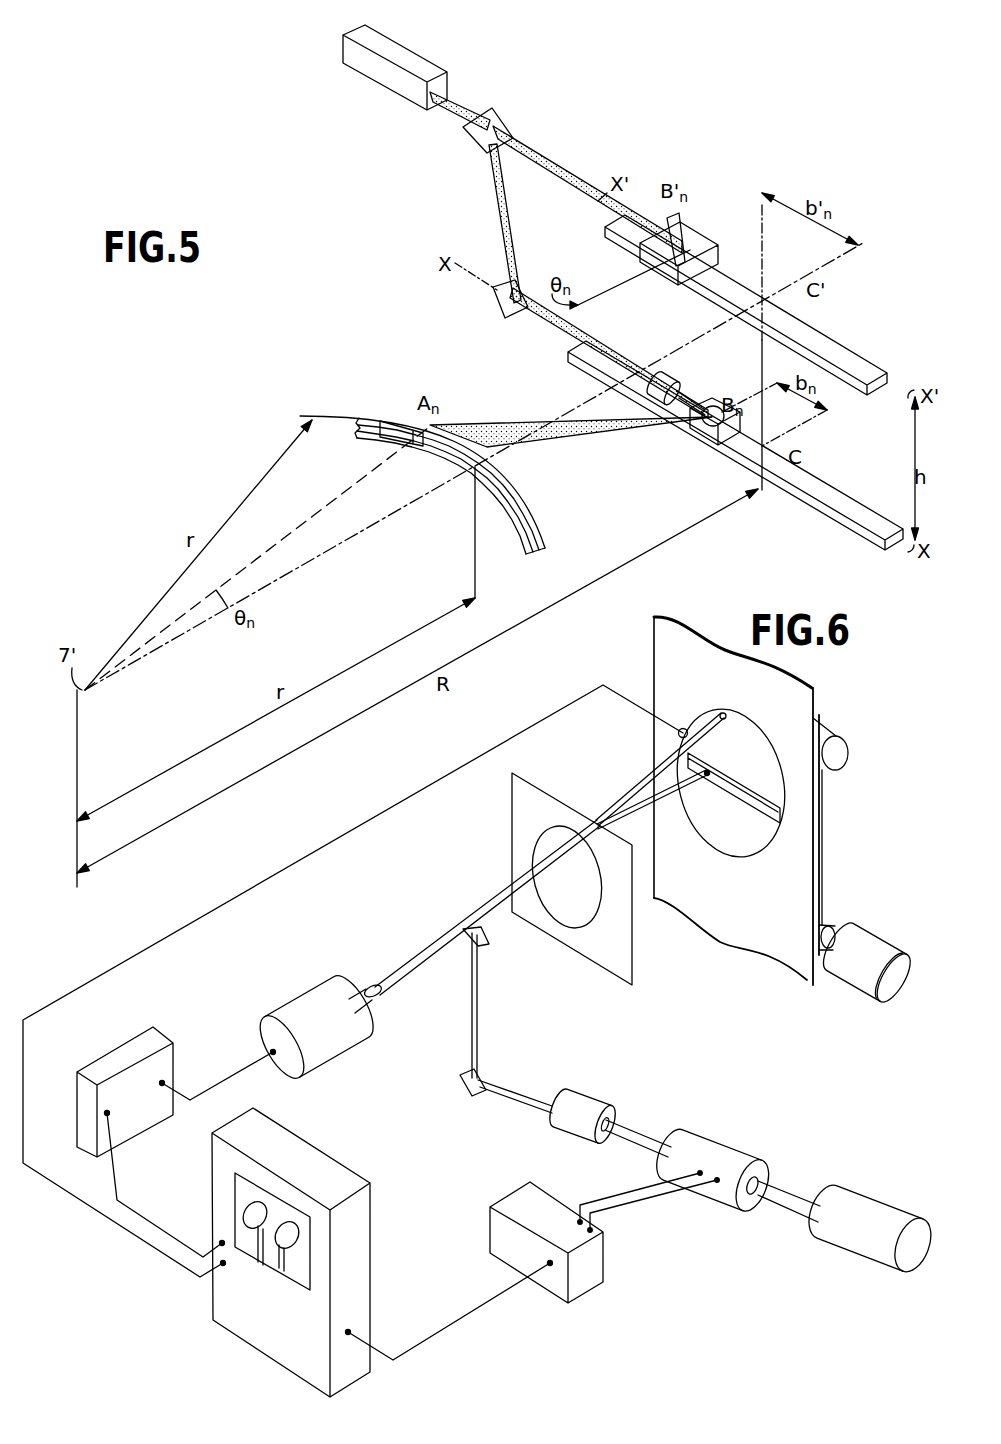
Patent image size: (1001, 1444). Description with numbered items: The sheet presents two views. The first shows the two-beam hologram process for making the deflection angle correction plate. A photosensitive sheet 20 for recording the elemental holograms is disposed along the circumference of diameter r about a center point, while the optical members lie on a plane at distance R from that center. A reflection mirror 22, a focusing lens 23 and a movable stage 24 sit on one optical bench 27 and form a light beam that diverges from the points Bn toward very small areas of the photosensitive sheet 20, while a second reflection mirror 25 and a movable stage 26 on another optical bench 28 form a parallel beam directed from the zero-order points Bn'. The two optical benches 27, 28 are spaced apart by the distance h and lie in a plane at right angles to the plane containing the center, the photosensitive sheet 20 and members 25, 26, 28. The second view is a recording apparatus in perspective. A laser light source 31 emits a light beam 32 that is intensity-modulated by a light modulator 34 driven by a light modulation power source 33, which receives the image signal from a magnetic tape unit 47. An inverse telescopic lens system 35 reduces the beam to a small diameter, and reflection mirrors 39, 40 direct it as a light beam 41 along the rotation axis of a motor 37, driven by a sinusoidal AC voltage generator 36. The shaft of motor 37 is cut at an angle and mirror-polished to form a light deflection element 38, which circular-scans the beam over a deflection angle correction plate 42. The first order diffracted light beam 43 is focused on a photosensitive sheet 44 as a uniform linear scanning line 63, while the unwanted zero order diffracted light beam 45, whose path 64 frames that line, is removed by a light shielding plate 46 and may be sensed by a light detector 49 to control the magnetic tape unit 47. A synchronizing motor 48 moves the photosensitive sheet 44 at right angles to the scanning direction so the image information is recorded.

In FIG. 5, the photosensitive sheet 20 is at (398, 427).
In FIG. 5, the reflection mirror 22 is at (704, 435).
In FIG. 5, the focusing lens 23 is at (671, 384).
In FIG. 5, the movable stage 24 is at (700, 400).
In FIG. 5, the reflection mirror 25 is at (685, 230).
In FIG. 5, the movable stage 26 is at (700, 260).
In FIG. 5, the optical bench 27 is at (857, 532).
In FIG. 5, the optical bench 28 is at (847, 366).
In FIG. 6, the laser light source 31 is at (870, 1212).
In FIG. 6, the light beam 32 is at (800, 1189).
In FIG. 6, the light modulation power source 33 is at (598, 1264).
In FIG. 6, the light modulator 34 is at (740, 1151).
In FIG. 6, the inverse telescopic lens system 35 is at (600, 1108).
In FIG. 6, the sinusoidal AC voltage generator 36 is at (118, 1062).
In FIG. 6, the motor 37 is at (280, 1010).
In FIG. 6, the light deflection element 38 is at (363, 985).
In FIG. 6, the reflection mirror 39 is at (485, 1078).
In FIG. 6, the reflection mirror 40 is at (486, 938).
In FIG. 6, the light beam 41 is at (434, 960).
In FIG. 6, the deflection angle correction plate 42 is at (549, 797).
In FIG. 6, the light beam 43 is at (672, 793).
In FIG. 6, the photosensitive sheet 44 is at (833, 742).
In FIG. 6, the zero order diffracted light beam 45 is at (632, 786).
In FIG. 6, the light shielding plate 46 is at (701, 648).
In FIG. 6, the magnetic tape unit 47 is at (258, 1340).
In FIG. 6, the synchronizing motor 48 is at (868, 940).
In FIG. 6, the light detector 49 is at (680, 727).
In FIG. 6, the linear line 63 is at (722, 793).
In FIG. 6, the path of zero order diffracted light beam 64 is at (760, 743).